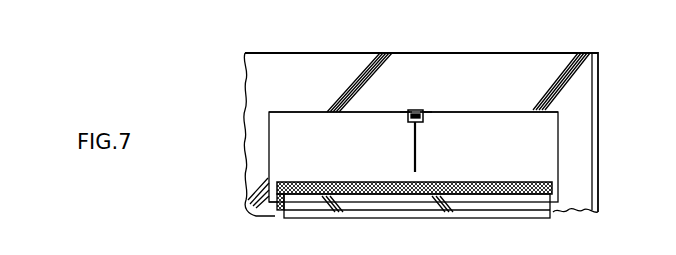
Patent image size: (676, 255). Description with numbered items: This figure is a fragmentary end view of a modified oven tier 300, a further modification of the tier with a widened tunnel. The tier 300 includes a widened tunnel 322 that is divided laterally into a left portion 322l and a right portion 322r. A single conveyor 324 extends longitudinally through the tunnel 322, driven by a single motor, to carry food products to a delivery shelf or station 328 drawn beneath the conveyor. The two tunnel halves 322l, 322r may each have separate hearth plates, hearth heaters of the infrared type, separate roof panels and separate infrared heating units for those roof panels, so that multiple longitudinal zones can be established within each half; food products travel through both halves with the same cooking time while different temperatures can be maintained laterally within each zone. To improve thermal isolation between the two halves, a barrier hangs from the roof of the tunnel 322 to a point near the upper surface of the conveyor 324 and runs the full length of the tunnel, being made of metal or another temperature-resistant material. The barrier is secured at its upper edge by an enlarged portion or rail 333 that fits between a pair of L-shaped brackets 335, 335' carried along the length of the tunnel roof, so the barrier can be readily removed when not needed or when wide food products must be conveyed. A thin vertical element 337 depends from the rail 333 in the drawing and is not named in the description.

The modified tier 300 is at (238, 92).
The widened tunnel 322 is at (540, 122).
The left portion 322l is at (287, 120).
The right portion 322r is at (480, 118).
The single conveyor 324 is at (325, 182).
The delivery shelf 328 is at (460, 205).
The rail 333 is at (420, 110).
The L-shaped bracket 335 is at (374, 127).
The L-shaped bracket 335' is at (452, 127).
The lead wire 337 is at (416, 158).